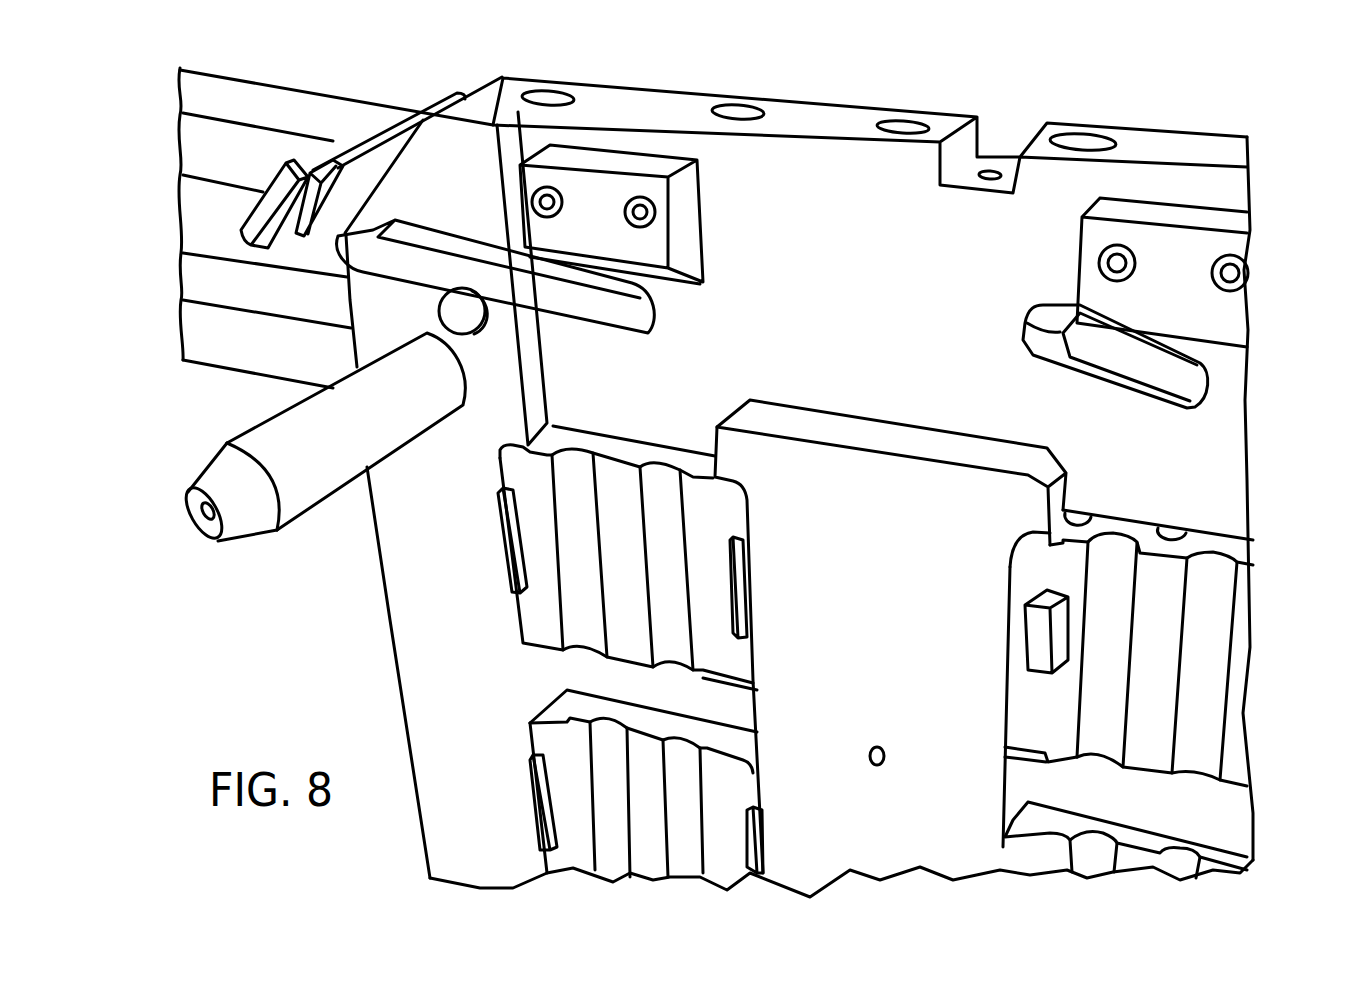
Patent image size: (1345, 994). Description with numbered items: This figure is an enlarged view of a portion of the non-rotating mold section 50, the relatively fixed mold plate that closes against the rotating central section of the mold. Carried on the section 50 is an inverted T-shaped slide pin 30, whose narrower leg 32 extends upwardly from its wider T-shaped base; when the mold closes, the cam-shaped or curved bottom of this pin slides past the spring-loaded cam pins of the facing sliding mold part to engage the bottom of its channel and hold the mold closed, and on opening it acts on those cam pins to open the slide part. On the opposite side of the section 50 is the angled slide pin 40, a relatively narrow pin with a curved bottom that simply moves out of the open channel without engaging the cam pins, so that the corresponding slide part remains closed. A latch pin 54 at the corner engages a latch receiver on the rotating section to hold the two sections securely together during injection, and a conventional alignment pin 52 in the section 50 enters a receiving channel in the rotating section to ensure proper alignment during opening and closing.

The slide pin 30 is at (420, 260).
The leg 32 is at (407, 226).
The slide pin 40 is at (1182, 374).
The non-rotating mold section 50 is at (820, 170).
The alignment pin 52 is at (306, 487).
The latch pin 54 is at (313, 163).